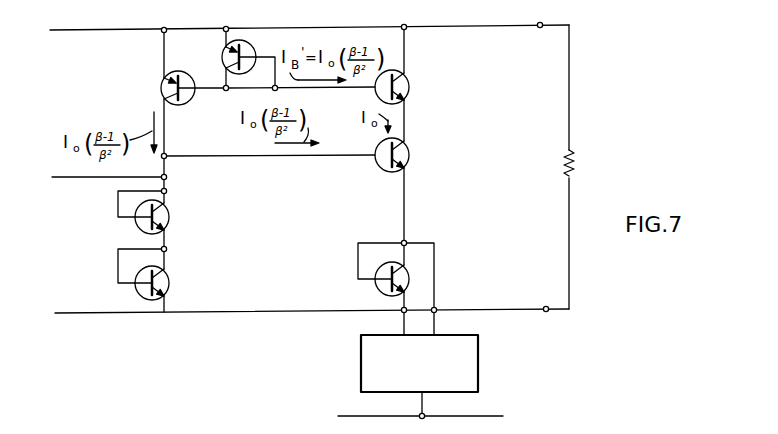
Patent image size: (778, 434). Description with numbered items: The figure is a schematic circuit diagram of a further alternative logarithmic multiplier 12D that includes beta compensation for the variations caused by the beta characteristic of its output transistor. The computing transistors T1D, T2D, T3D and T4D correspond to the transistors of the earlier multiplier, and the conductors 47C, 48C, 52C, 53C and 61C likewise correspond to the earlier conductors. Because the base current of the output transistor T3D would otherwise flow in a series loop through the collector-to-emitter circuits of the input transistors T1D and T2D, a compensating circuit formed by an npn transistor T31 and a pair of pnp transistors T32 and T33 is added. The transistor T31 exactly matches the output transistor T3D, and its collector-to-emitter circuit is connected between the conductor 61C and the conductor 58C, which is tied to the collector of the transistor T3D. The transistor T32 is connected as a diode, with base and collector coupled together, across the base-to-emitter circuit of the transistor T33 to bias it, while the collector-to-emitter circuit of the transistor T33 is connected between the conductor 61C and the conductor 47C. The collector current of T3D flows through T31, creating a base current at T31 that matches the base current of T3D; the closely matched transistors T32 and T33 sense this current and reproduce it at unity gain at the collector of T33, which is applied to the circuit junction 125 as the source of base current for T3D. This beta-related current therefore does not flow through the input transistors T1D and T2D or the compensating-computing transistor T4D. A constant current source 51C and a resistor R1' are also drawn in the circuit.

The conductor 61C is at (317, 27).
The pnp transistor T32 is at (223, 50).
The pnp transistor T33 is at (160, 88).
The npn transistor T31 is at (409, 85).
The conductor 58C is at (406, 120).
The output transistor T3D is at (410, 160).
The circuit junction 125 is at (166, 159).
The conductor 47C is at (268, 157).
The input transistor T1D is at (171, 218).
The input transistor T2D is at (171, 284).
The logarithmic multiplier 12D is at (302, 253).
The conductor 48C is at (258, 312).
The compensating-computing transistor T4D is at (380, 289).
The conductor 53C is at (408, 283).
The constant current source 51C is at (361, 366).
The conductor 52C is at (485, 416).
The resistor R1' is at (584, 166).